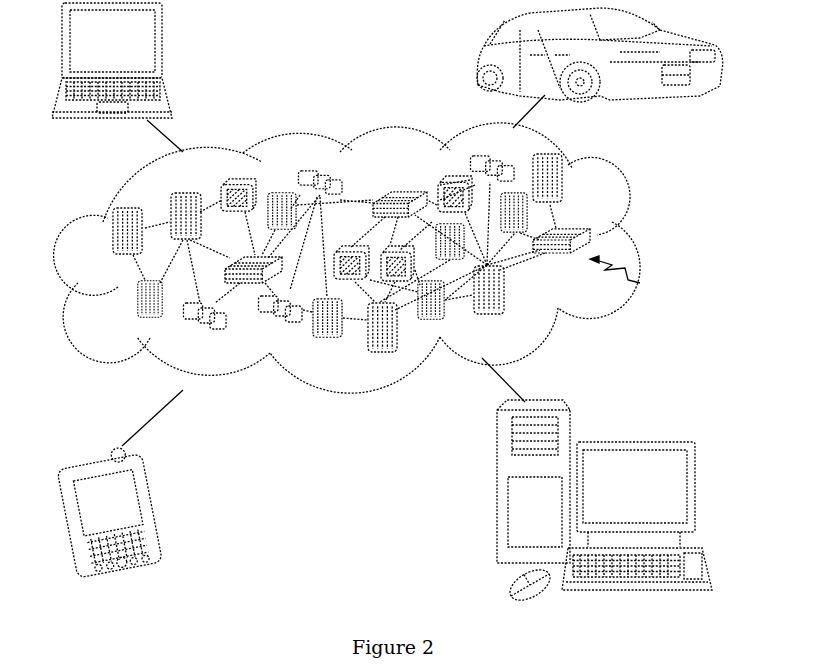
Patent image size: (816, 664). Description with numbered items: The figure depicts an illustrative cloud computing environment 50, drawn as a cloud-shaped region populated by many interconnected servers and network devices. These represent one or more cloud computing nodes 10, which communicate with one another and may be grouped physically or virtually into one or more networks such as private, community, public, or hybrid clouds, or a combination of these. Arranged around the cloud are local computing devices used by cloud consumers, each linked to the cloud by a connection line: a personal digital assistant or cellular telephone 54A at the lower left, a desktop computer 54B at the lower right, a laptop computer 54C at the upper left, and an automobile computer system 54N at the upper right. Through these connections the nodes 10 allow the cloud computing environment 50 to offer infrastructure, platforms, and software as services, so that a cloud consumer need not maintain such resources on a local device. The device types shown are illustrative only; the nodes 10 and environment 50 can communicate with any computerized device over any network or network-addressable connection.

The cloud computing nodes 10 is at (627, 275).
The cloud computing environment 50 is at (636, 240).
The personal digital assistant (PDA) or cellular telephone 54A is at (156, 507).
The desktop computer 54B is at (632, 441).
The laptop computer 54C is at (163, 52).
The automobile computer system 54N is at (478, 62).